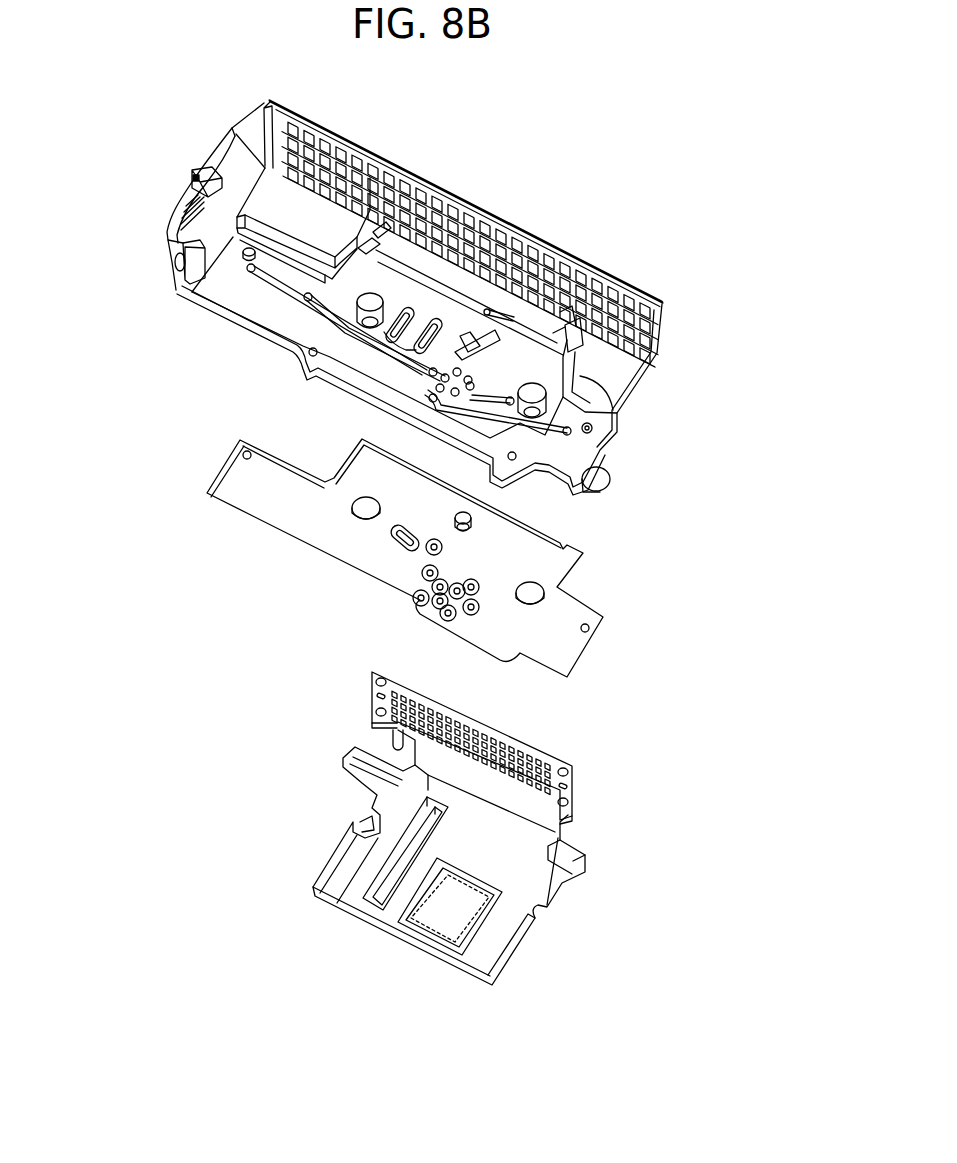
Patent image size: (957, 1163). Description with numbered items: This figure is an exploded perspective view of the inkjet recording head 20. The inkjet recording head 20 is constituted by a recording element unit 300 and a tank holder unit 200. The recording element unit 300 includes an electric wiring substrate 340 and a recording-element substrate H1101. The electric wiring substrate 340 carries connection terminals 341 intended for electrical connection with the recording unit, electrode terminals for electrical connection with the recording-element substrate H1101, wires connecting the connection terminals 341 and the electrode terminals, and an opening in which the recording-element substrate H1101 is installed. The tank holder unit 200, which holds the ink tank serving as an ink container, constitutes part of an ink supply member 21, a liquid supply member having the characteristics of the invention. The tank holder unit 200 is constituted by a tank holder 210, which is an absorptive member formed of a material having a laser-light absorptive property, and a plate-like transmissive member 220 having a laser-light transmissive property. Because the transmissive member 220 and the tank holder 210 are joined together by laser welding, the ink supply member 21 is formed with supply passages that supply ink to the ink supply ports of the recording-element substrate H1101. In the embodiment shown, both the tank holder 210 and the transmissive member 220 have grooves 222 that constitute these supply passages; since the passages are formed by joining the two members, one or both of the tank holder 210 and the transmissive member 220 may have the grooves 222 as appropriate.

The inkjet recording head 20 is at (779, 403).
The tank holder unit 200 is at (671, 143).
The ink supply member 21 is at (112, 410).
The tank holder 210 is at (262, 308).
The transmissive member 220 is at (283, 507).
The grooves 222 is at (465, 348).
The recording element unit 300 is at (668, 720).
The electric wiring substrate 340 is at (572, 792).
The connection terminals 341 is at (558, 743).
The recording-element substrate H1101 is at (448, 908).